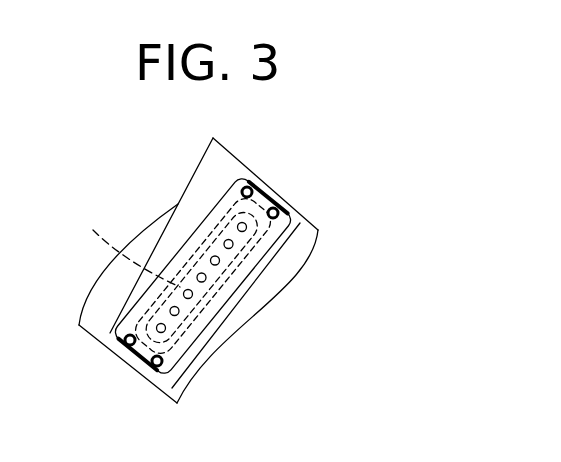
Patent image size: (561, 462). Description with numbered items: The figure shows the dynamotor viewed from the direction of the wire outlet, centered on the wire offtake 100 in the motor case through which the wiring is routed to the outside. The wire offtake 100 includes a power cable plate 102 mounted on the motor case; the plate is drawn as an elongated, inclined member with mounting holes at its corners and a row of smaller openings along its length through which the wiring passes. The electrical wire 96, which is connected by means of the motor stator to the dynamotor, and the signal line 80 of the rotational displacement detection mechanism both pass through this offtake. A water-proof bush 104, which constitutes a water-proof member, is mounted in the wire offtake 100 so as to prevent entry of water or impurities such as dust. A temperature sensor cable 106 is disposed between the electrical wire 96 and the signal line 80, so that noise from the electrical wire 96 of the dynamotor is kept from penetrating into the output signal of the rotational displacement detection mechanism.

The signal line 80 is at (238, 224).
The electrical wire 96 is at (204, 282).
The wire offtake 100 is at (298, 269).
The power cable plate 102 is at (262, 182).
The water-proof bush 104 is at (114, 246).
The temperature sensor cable 106 is at (186, 348).